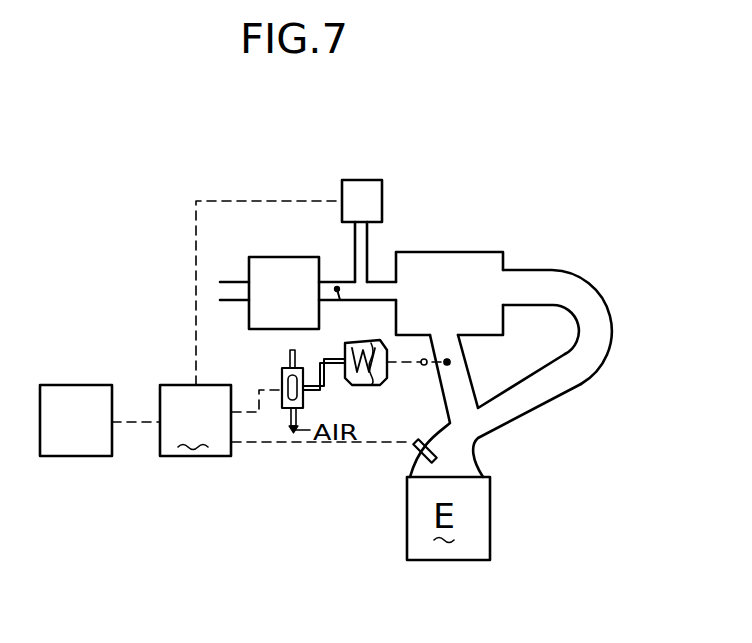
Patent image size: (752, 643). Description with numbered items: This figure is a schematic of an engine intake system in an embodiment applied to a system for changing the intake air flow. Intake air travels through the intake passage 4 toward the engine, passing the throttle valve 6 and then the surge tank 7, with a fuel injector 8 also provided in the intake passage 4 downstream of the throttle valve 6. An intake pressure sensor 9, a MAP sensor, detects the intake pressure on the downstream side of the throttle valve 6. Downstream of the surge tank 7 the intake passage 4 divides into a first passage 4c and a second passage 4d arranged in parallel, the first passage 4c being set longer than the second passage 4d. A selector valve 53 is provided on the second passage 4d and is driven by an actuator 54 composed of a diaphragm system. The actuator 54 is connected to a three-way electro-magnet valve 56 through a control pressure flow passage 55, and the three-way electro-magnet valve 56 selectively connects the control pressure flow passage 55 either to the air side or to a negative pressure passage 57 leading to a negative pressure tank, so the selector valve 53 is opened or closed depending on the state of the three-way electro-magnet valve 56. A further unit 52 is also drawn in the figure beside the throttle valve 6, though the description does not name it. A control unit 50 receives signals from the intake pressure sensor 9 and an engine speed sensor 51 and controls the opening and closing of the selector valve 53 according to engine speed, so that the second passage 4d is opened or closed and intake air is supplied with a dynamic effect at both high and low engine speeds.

The intake passage 4 is at (523, 421).
The first passage 4c is at (580, 372).
The second passage 4d is at (457, 390).
The throttle valve 6 is at (337, 288).
The surge tank 7 is at (473, 252).
The fuel injector 8 is at (410, 457).
The intake pressure sensor 9 is at (367, 180).
The control unit 50 is at (195, 420).
The engine speed sensor 51 is at (77, 385).
The valve unit 52 is at (276, 257).
The selector valve 53 is at (450, 360).
The actuator 54 is at (377, 385).
The control pressure flow passage 55 is at (340, 352).
The three-way electro-magnet valve 56 is at (282, 380).
The negative pressure passage 57 is at (292, 362).